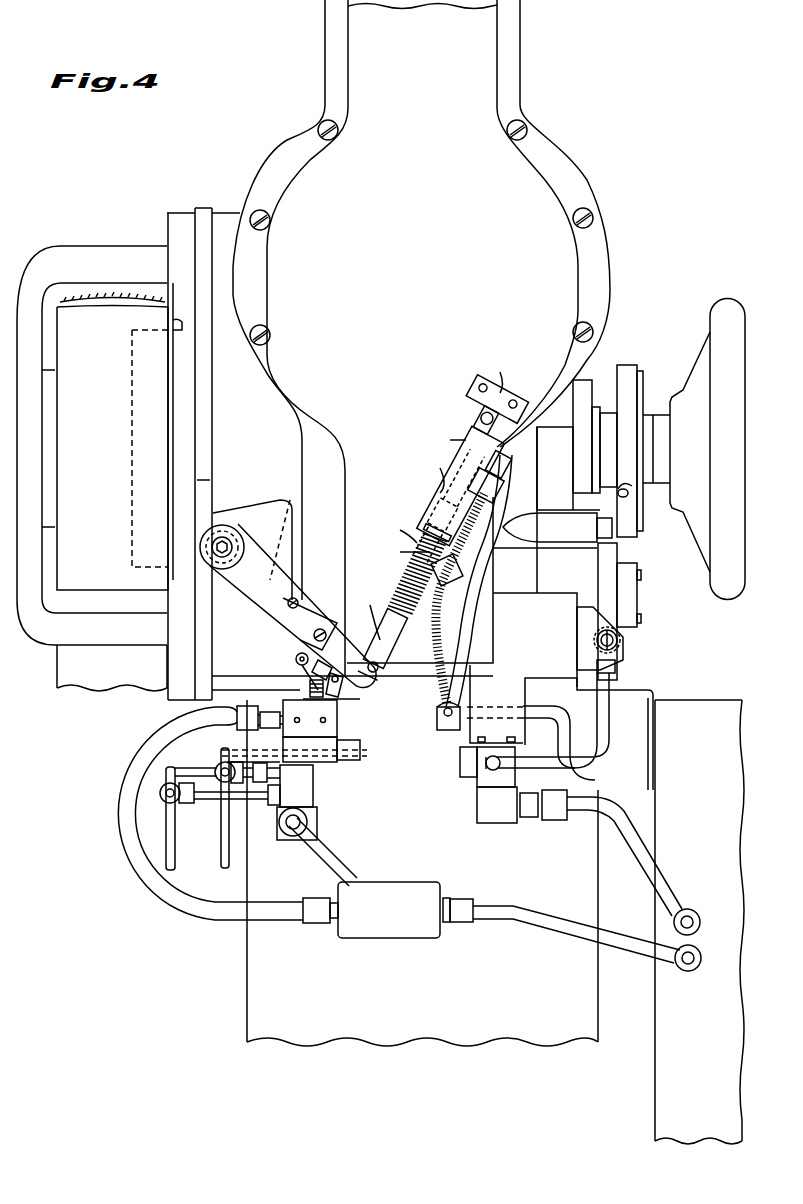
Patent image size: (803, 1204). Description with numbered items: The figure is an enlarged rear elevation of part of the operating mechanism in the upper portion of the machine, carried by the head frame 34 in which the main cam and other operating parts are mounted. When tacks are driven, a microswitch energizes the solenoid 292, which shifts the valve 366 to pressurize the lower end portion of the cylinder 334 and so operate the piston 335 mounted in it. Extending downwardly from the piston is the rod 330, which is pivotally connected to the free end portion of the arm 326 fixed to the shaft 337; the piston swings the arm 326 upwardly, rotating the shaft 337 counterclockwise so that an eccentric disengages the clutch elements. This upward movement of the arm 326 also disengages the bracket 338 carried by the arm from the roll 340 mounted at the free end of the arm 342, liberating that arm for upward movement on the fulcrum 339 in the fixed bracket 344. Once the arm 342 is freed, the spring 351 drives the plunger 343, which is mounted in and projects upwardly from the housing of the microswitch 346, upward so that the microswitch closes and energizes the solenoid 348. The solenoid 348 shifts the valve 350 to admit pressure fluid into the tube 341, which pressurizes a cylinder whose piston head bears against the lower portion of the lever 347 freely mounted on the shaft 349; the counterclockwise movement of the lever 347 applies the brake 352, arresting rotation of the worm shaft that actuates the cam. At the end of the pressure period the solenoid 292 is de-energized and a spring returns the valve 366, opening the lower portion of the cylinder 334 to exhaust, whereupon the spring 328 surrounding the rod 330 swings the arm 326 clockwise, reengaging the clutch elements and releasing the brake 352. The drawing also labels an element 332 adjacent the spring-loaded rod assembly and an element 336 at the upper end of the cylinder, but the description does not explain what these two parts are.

The head frame 34 is at (570, 171).
The solenoid 292 is at (285, 824).
The arm 326 is at (262, 553).
The spring 328 is at (377, 588).
The rod 330 is at (380, 587).
The cylinder 332 is at (358, 629).
The cylinder 334 is at (454, 468).
The piston 335 is at (426, 493).
The bracket 336 is at (471, 424).
The shaft 337 is at (222, 546).
The bracket 338 is at (305, 612).
The fulcrum 339 is at (446, 700).
The roll 340 is at (300, 650).
The tube 341 is at (605, 707).
The arm 342 is at (298, 664).
The plunger 343 is at (212, 680).
The fixed bracket 344 is at (342, 690).
The microswitch 346 is at (305, 790).
The lever 347 is at (610, 610).
The solenoid 348 is at (483, 810).
The shaft 349 is at (641, 575).
The valve 350 is at (488, 777).
The spring 351 is at (235, 722).
The brake 352 is at (626, 328).
The valve 366 is at (317, 828).